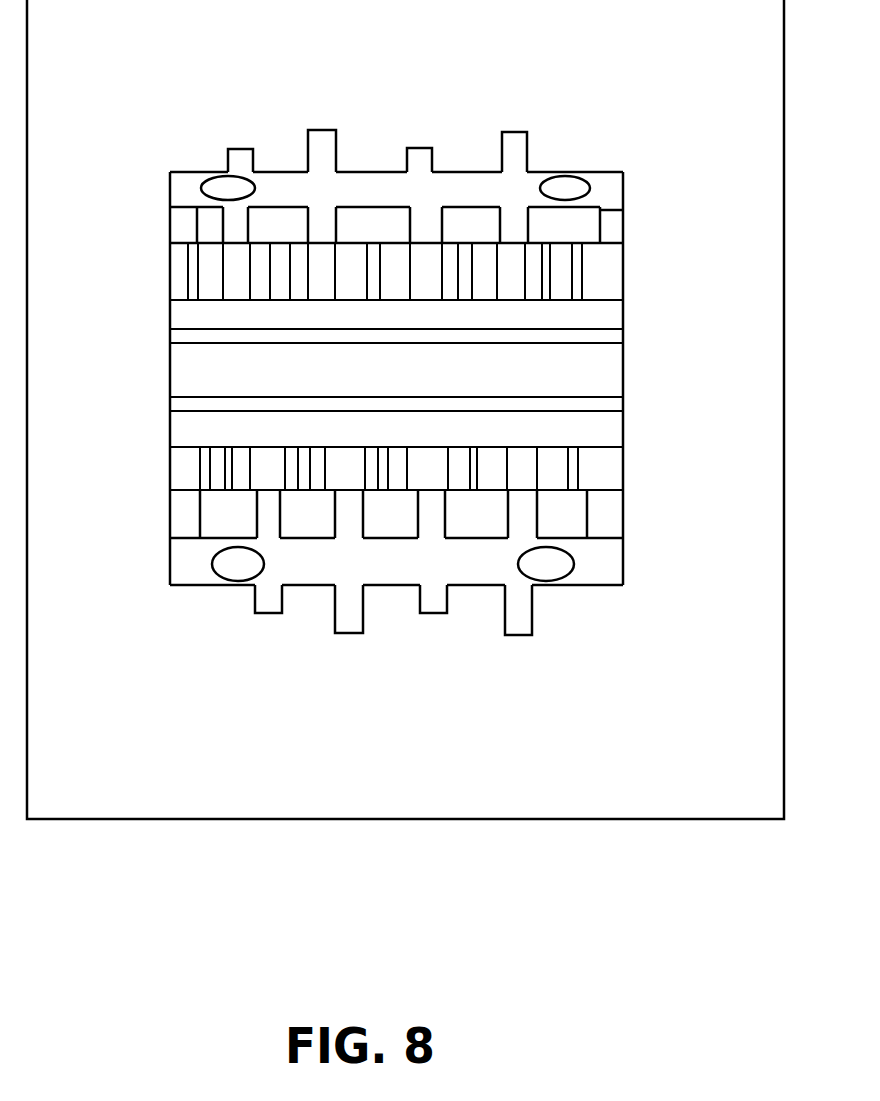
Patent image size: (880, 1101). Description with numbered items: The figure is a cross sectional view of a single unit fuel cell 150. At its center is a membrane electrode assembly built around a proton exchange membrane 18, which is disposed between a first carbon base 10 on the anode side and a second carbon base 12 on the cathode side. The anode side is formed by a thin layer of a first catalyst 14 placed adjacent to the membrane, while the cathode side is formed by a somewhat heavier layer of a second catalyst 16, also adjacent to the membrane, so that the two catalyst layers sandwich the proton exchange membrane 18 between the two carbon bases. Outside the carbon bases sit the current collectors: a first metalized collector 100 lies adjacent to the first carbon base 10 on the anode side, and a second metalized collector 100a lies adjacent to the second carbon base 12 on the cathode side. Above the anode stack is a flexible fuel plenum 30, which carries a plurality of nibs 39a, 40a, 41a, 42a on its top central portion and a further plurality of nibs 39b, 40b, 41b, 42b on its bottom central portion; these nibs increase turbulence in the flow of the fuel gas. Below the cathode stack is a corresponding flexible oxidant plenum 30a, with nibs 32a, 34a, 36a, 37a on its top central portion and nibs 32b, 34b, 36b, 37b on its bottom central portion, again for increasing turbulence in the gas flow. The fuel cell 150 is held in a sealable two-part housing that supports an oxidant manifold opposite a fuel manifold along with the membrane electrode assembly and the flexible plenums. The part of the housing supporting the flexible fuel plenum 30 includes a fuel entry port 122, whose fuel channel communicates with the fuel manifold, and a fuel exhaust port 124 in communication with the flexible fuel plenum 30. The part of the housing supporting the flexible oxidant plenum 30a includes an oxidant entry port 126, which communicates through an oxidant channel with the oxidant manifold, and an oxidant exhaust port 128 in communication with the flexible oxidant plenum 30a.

The first carbon base 10 is at (565, 313).
The second carbon base 12 is at (572, 435).
The first catalyst 14 is at (585, 338).
The second catalyst 16 is at (590, 405).
The proton exchange membrane 18 is at (578, 365).
The flexible fuel plenum 30 is at (610, 190).
The flexible oxidant plenum 30a is at (605, 559).
The nib 32a is at (263, 525).
The nib 32b is at (270, 600).
The nib 34a is at (342, 515).
The nib 34b is at (347, 623).
The nib 36a is at (425, 525).
The nib 36b is at (435, 598).
The nib 37a is at (522, 503).
The nib 37b is at (518, 622).
The nib 39a is at (235, 220).
The nib 39b is at (242, 160).
The nib 40a is at (320, 227).
The nib 40b is at (322, 145).
The nib 41a is at (423, 227).
The nib 41b is at (420, 157).
The nib 42a is at (512, 230).
The nib 42b is at (517, 157).
The first metalized collector 100 is at (213, 277).
The second metalized collector 100a is at (235, 468).
The fuel entry port 122 is at (230, 188).
The fuel exhaust port 124 is at (565, 188).
The oxidant entry port 126 is at (227, 567).
The oxidant exhaust port 128 is at (550, 564).
The single unit fuel cell 150 is at (408, 820).